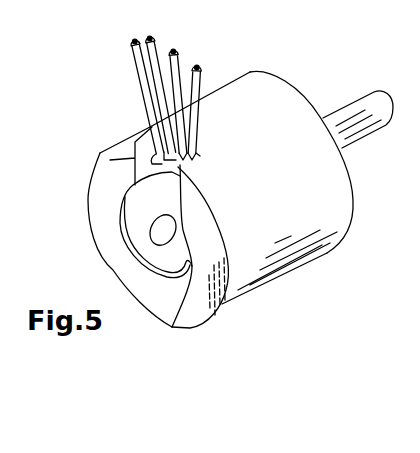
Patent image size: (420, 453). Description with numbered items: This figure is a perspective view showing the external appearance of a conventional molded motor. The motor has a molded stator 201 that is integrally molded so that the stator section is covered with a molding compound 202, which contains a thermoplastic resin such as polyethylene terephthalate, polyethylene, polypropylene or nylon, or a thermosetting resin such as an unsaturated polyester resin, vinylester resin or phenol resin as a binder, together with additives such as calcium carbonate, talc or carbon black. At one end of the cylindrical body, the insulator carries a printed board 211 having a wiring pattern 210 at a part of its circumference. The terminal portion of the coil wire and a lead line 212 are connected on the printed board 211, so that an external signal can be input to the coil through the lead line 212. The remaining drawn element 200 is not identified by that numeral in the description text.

The sensor front end / sensing face 200 is at (173, 328).
The direction arrow 201 is at (188, 328).
The sensor housing body 202 is at (300, 263).
The terminal block 210 is at (110, 160).
The ring flange 211 is at (157, 172).
The terminal pins 212 is at (138, 72).